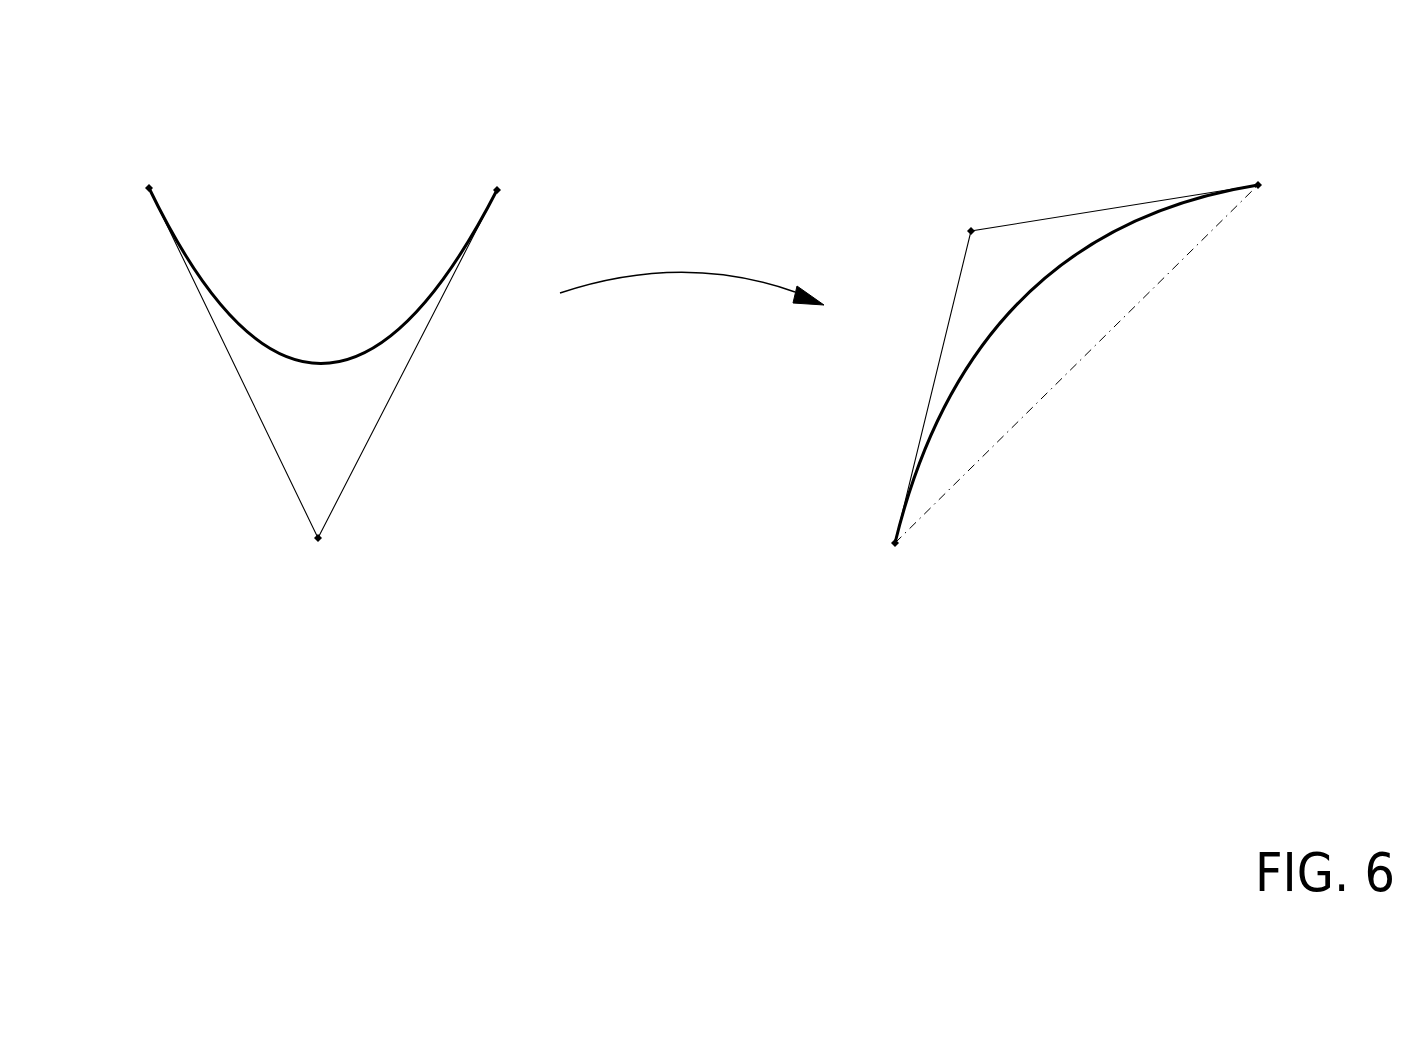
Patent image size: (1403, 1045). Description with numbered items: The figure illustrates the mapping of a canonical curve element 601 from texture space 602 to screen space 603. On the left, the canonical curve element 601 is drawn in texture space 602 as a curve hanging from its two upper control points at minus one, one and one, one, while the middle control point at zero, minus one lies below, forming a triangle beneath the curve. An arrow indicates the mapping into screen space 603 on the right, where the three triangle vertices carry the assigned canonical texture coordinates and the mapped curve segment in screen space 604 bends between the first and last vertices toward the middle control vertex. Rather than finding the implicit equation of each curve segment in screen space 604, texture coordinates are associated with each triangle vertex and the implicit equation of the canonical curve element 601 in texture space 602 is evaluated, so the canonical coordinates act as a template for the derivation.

The canonical curve element 601 is at (380, 342).
The texture space 602 is at (320, 326).
The screen space 603 is at (1086, 326).
The curve segment in screen space 604 is at (1032, 293).